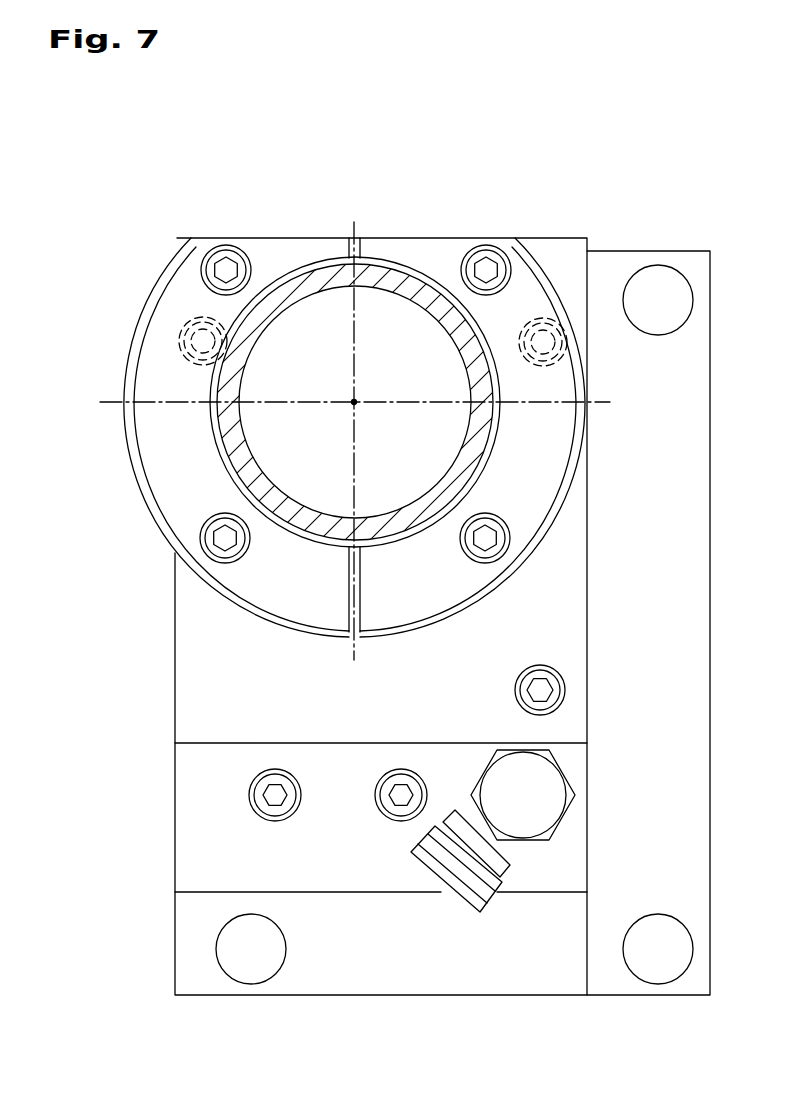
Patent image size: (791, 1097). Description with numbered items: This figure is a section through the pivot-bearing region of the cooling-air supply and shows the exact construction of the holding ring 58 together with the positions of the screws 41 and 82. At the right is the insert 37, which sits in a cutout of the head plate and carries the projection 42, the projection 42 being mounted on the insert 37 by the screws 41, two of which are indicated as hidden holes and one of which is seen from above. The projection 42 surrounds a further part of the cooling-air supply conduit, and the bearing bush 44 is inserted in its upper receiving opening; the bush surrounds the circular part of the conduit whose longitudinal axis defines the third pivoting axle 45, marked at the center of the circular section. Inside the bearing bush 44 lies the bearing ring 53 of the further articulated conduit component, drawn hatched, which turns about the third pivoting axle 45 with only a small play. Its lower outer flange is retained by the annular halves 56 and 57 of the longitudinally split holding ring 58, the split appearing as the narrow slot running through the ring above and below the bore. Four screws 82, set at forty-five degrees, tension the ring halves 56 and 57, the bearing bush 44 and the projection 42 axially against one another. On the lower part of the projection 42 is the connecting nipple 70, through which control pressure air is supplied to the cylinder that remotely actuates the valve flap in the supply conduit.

The insert 37 is at (708, 251).
The screws 41 is at (203, 343).
The projection 42 is at (587, 239).
The bearing bush 44 is at (157, 525).
The third pivoting axle 45 is at (356, 401).
The bearing ring 53 is at (452, 485).
The annular half 56 is at (168, 458).
The annular half 57 is at (430, 598).
The holding ring 58 is at (377, 618).
The connecting nipple 70 is at (537, 807).
The screws 82 is at (218, 270).